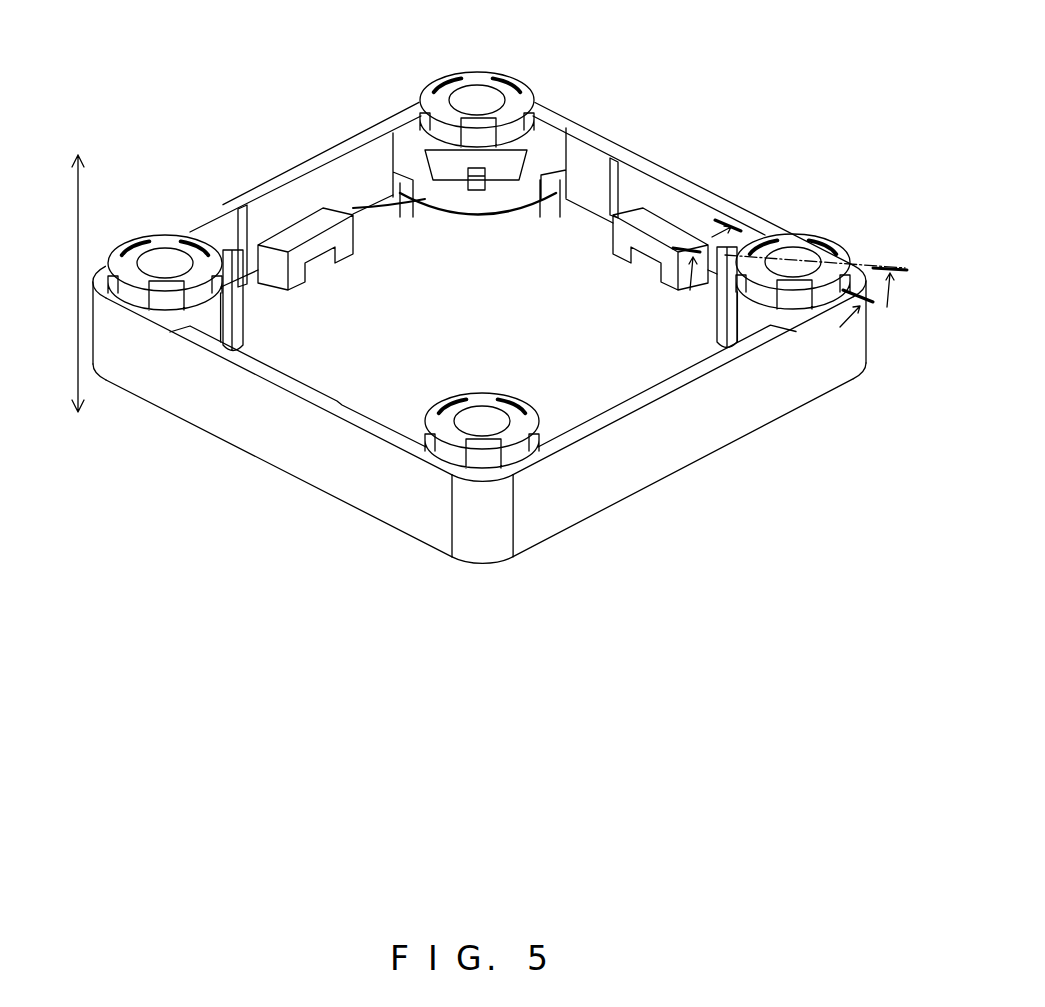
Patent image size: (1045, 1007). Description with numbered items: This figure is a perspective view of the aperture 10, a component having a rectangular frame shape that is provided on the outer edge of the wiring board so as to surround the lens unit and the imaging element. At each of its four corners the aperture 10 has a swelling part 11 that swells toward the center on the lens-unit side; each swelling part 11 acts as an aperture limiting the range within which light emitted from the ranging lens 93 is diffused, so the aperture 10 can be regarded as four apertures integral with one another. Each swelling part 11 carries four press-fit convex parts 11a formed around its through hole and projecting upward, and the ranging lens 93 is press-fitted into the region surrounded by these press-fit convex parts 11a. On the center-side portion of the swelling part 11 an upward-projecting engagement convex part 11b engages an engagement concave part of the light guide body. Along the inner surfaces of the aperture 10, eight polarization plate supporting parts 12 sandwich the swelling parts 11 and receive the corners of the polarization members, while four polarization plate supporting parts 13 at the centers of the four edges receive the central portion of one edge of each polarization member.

The aperture 10 is at (317, 150).
The swelling part 11 is at (407, 128).
The press-fit convex part 11a is at (137, 233).
The engagement convex part 11b is at (482, 168).
The polarization plate supporting part 12 is at (228, 240).
The polarization plate supporting part 13 is at (313, 222).
The ranging lens 93 is at (478, 90).